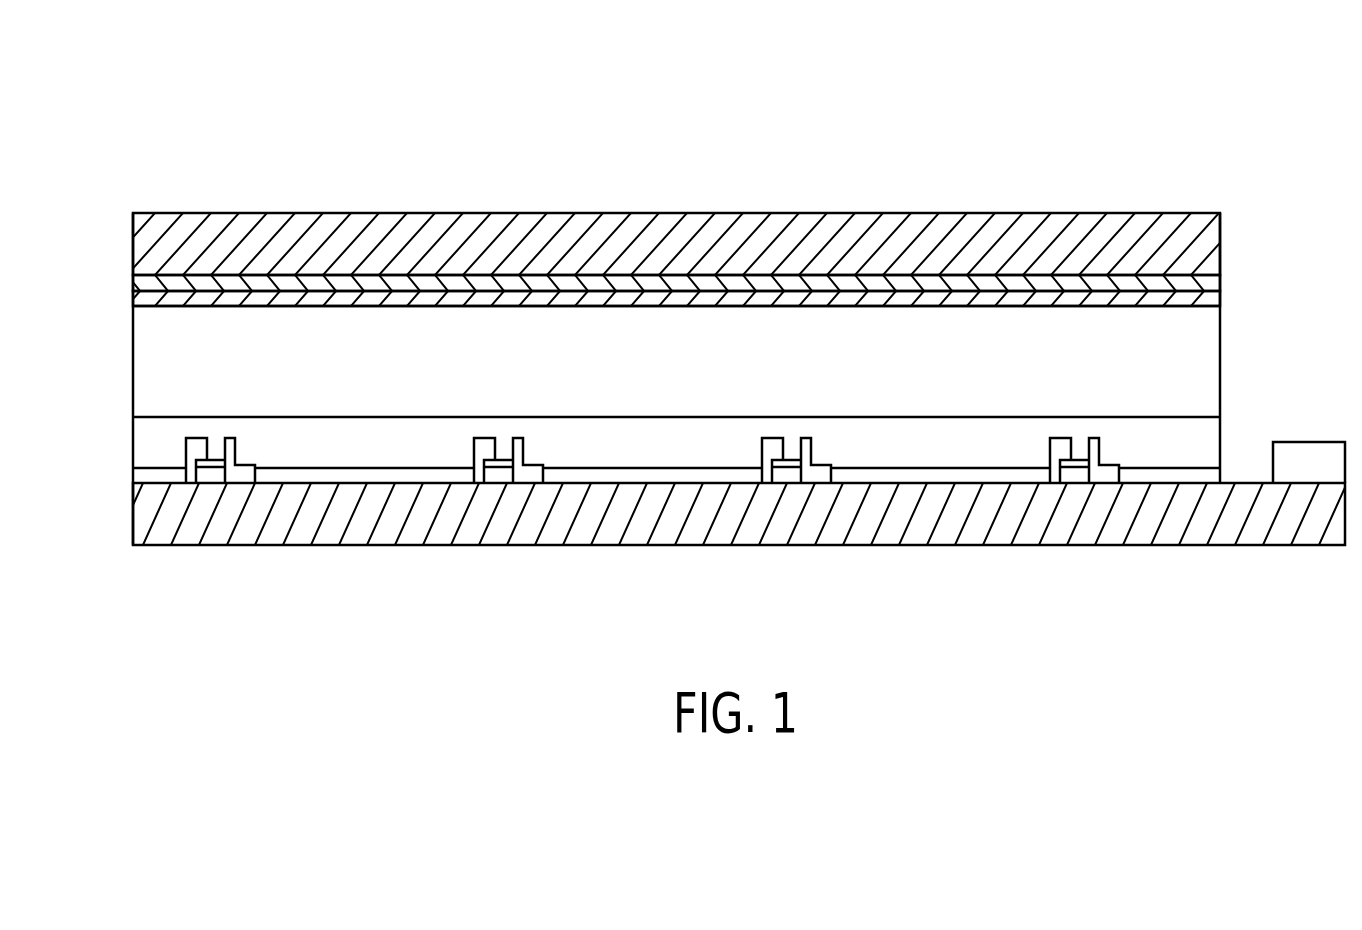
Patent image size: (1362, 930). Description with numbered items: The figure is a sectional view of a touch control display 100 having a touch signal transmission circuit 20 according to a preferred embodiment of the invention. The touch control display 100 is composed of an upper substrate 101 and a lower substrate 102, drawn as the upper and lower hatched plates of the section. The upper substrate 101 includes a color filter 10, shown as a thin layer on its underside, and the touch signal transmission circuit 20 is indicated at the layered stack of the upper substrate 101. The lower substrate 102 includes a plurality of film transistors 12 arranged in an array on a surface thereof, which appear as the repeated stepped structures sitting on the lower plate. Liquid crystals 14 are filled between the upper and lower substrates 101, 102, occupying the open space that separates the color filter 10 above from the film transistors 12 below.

The touch control display 100 is at (1054, 114).
The upper substrate 101 is at (449, 247).
The lower substrate 102 is at (580, 533).
The color filter 10 is at (1213, 297).
The touch signal transmission circuit 20 is at (1233, 277).
The liquid crystals 14 is at (162, 380).
The film transistors 12 is at (192, 453).